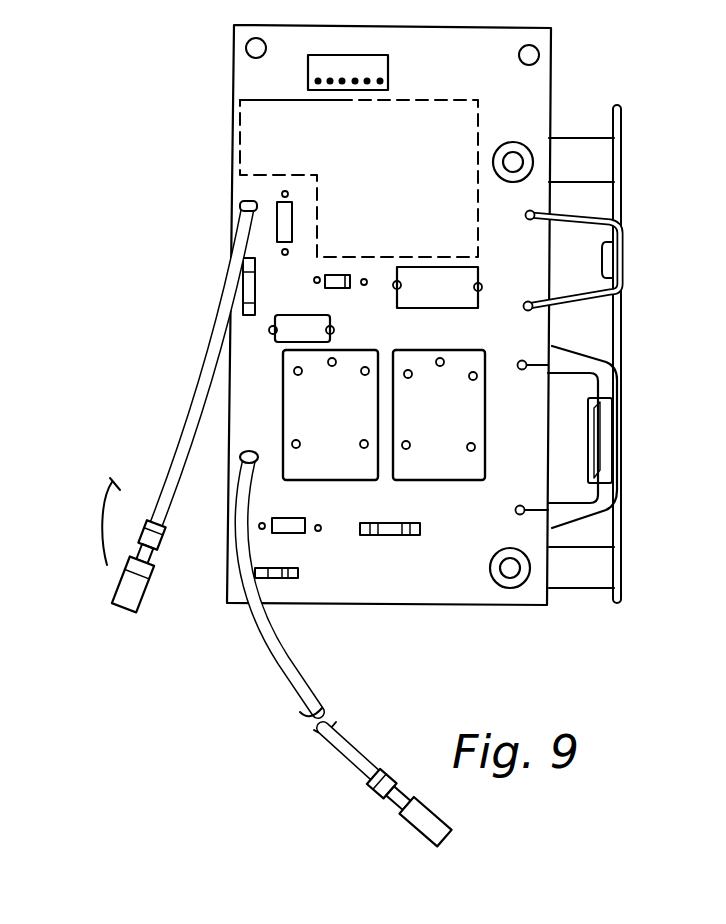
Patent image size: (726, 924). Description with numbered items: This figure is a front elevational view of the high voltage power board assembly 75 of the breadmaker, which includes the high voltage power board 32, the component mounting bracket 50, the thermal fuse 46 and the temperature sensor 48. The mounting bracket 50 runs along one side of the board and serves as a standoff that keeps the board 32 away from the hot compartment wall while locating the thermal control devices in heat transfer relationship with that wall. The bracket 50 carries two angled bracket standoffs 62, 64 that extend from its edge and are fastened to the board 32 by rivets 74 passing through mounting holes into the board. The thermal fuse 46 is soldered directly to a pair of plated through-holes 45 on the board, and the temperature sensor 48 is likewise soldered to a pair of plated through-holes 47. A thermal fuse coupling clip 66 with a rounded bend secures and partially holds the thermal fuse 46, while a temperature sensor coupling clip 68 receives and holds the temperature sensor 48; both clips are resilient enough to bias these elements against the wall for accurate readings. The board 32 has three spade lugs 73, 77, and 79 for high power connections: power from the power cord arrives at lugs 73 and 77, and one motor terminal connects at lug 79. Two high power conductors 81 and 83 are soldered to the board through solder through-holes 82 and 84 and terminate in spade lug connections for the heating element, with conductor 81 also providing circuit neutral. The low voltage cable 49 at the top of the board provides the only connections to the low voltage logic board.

The high voltage power board 32 is at (224, 186).
The plated through-holes 45 is at (526, 216).
The thermal fuse 46 is at (608, 245).
The plated through-holes 47 is at (520, 370).
The temperature sensor 48 is at (605, 435).
The low voltage cable 49 is at (308, 58).
The component mounting bracket 50 is at (584, 605).
The bracket standoff 62 is at (623, 162).
The bracket standoff 64 is at (617, 570).
The thermal fuse coupling clip 66 is at (612, 291).
The temperature sensor coupling clip 68 is at (602, 400).
The spade lug 73 is at (392, 537).
The rivets 74 is at (515, 160).
The high voltage power board assembly 75 is at (150, 372).
The spade lug 77 is at (293, 578).
The spade lug 79 is at (270, 293).
The high power conductor 81 is at (152, 493).
The solder through-hole 82 is at (240, 208).
The high power conductor 83 is at (303, 677).
The solder through-hole 84 is at (228, 474).